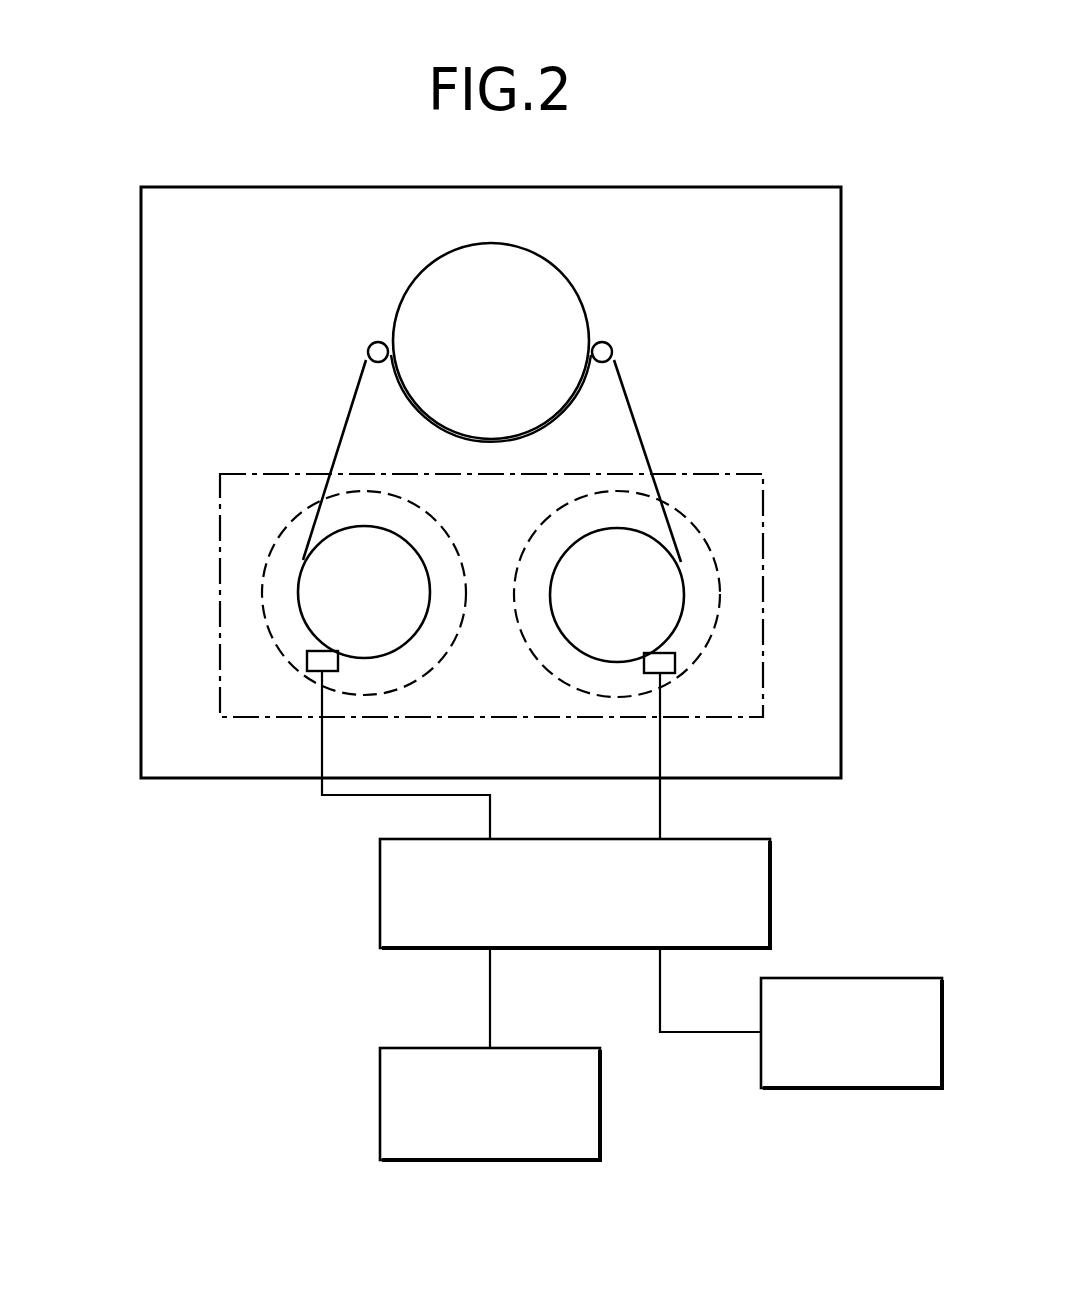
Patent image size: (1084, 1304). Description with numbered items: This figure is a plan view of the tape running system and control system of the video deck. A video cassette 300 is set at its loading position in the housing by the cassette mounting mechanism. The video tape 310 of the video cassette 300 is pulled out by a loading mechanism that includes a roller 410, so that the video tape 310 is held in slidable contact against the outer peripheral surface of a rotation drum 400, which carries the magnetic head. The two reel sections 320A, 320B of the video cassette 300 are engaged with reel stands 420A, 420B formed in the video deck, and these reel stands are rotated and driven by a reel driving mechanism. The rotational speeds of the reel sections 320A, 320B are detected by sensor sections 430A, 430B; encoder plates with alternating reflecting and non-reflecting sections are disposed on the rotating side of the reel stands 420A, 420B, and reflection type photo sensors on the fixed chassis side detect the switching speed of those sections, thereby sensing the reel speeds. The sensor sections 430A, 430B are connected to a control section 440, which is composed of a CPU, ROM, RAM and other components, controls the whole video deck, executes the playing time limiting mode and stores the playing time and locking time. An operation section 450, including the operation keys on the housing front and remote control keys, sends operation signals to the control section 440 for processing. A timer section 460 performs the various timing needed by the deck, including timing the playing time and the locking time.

The video cassette 300 is at (763, 578).
The video tape 310 is at (630, 387).
The reel section 320A is at (330, 565).
The reel section 320B is at (645, 565).
The rotation drum 400 is at (550, 282).
The roller 410 is at (374, 342).
The reel stand 420A is at (290, 530).
The reel stand 420B is at (697, 530).
The sensor section 430A is at (307, 664).
The sensor section 430B is at (675, 661).
The control section 440 is at (380, 893).
The operation section 450 is at (380, 1103).
The timer section 460 is at (851, 1088).